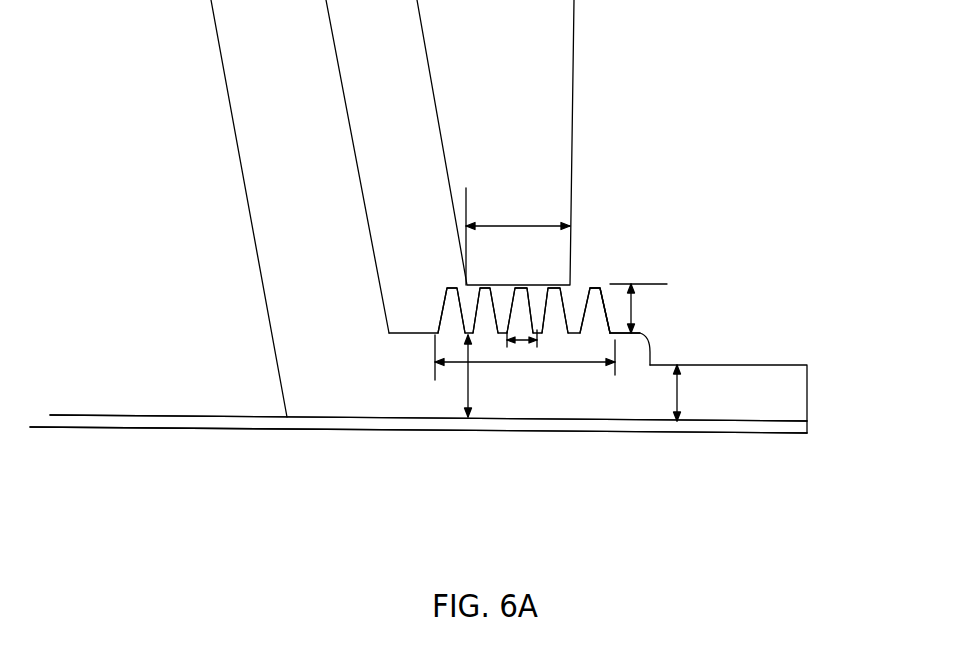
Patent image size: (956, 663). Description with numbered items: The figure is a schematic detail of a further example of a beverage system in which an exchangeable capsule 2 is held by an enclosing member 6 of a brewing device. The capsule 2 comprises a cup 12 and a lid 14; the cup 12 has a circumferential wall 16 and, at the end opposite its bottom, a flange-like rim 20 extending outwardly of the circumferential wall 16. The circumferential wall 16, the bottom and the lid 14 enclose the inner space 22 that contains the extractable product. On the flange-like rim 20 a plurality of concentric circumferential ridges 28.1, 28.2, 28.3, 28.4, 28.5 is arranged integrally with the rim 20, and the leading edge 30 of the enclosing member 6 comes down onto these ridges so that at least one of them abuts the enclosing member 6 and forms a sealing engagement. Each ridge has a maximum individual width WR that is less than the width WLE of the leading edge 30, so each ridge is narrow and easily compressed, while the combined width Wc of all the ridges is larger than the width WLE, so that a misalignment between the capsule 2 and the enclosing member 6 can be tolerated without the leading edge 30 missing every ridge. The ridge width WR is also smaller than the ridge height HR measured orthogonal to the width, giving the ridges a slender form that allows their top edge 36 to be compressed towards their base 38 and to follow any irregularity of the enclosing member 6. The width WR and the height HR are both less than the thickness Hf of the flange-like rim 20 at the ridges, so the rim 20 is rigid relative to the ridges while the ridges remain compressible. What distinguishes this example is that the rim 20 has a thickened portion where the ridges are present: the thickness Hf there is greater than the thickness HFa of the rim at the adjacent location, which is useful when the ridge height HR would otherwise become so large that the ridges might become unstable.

The exchangeable capsule 2 is at (310, 408).
The enclosing member 6 is at (562, 173).
The cup 12 is at (257, 90).
The lid 14 is at (717, 433).
The circumferential wall 16 is at (273, 237).
The flange-like rim 20 is at (795, 401).
The inner space 22 is at (233, 403).
The circumferential ridge 28.1 is at (453, 325).
The circumferential ridge 28.2 is at (487, 337).
The circumferential ridge 28.3 is at (523, 337).
The circumferential ridge 28.4 is at (560, 337).
The circumferential ridge 28.5 is at (598, 337).
The leading edge 30 is at (462, 305).
The top edge 36 is at (600, 278).
The base 38 is at (608, 340).
The width of the leading edge WLE is at (528, 222).
The height of the ridge HR is at (633, 306).
The thickness of the flange-like rim Hf is at (483, 376).
The combined width of the ridges Wc is at (452, 337).
The width of the ridge WR is at (516, 345).
The thickness of the flange-like rim at an adjacent location HFa is at (683, 396).